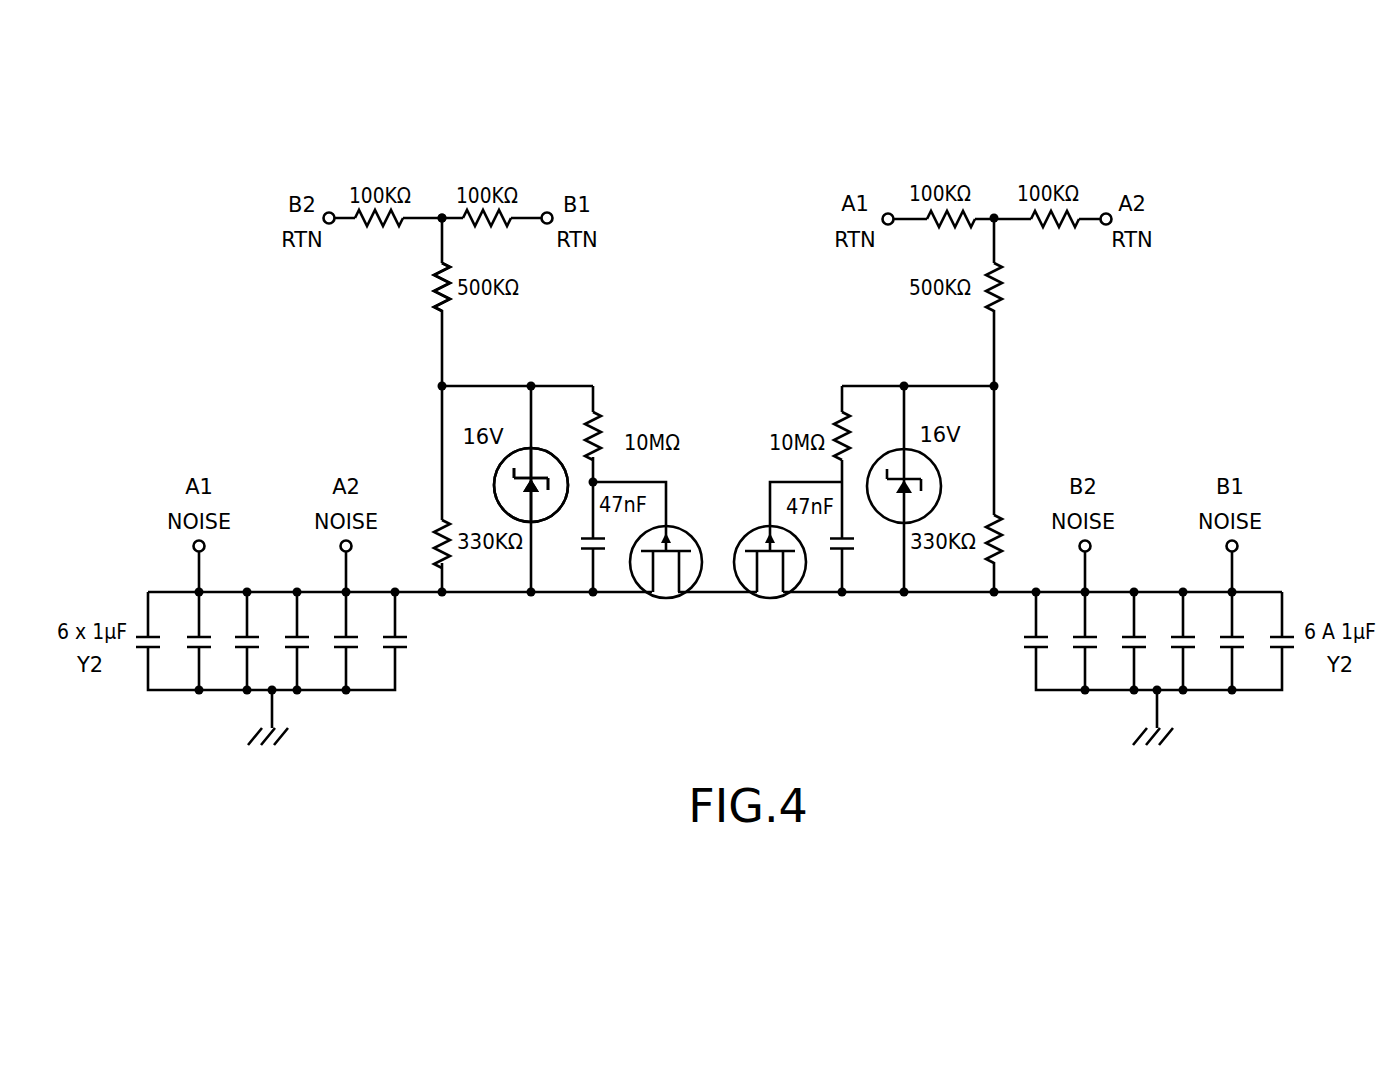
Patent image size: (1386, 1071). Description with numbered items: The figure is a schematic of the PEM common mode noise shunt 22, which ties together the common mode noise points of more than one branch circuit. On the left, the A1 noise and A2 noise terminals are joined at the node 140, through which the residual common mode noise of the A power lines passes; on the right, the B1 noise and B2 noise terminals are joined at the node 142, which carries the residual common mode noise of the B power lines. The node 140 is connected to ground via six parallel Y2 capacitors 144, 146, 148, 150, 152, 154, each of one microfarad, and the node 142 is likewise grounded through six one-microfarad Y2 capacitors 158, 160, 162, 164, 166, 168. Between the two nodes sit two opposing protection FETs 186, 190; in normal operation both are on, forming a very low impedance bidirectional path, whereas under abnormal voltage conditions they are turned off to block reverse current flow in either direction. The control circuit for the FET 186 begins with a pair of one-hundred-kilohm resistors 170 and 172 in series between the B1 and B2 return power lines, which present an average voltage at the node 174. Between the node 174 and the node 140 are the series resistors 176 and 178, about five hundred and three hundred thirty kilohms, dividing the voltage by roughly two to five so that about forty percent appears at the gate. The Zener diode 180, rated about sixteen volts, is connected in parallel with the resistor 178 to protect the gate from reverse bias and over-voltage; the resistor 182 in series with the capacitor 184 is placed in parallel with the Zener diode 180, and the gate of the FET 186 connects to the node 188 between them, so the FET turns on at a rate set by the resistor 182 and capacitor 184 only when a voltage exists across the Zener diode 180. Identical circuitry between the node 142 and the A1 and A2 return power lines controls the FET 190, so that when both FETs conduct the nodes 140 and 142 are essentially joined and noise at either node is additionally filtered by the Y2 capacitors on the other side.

The PEM common mode noise shunt 22 is at (1167, 160).
The node 140 is at (261, 598).
The node 142 is at (1149, 598).
The Y2 capacitor 144 is at (140, 657).
The Y2 capacitor 146 is at (187, 657).
The Y2 capacitor 148 is at (235, 657).
The Y2 capacitor 150 is at (307, 657).
The Y2 capacitor 152 is at (355, 657).
The Y2 capacitor 154 is at (403, 657).
The Y2 capacitor 158 is at (1025, 657).
The Y2 capacitor 160 is at (1073, 657).
The Y2 capacitor 162 is at (1122, 657).
The Y2 capacitor 164 is at (1192, 657).
The Y2 capacitor 166 is at (1241, 657).
The Y2 capacitor 168 is at (1290, 657).
The resistor 170 is at (380, 232).
The resistor 172 is at (522, 212).
The node 174 is at (442, 205).
The resistor 176 is at (427, 288).
The resistor 178 is at (425, 522).
The Zener diode 180 is at (542, 443).
The resistor 182 is at (607, 433).
The capacitor 184 is at (587, 555).
The protection FET 186 is at (658, 607).
The node 188 is at (612, 473).
The protection FET 190 is at (778, 607).